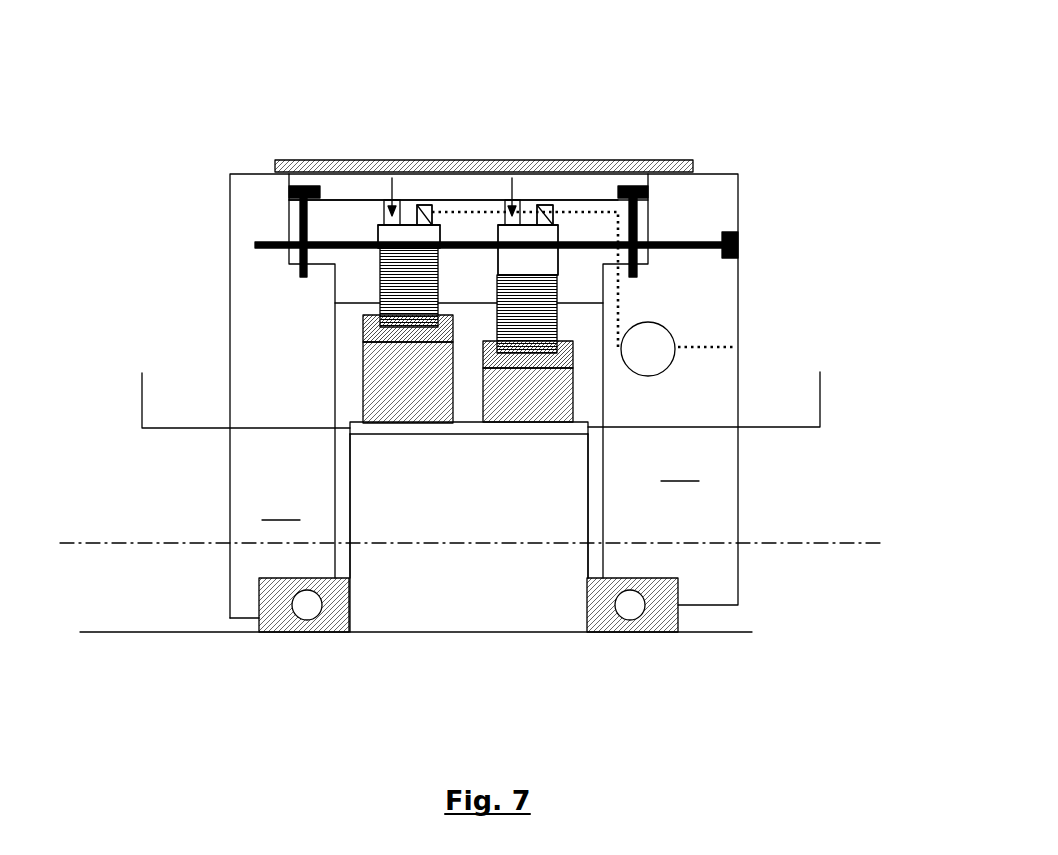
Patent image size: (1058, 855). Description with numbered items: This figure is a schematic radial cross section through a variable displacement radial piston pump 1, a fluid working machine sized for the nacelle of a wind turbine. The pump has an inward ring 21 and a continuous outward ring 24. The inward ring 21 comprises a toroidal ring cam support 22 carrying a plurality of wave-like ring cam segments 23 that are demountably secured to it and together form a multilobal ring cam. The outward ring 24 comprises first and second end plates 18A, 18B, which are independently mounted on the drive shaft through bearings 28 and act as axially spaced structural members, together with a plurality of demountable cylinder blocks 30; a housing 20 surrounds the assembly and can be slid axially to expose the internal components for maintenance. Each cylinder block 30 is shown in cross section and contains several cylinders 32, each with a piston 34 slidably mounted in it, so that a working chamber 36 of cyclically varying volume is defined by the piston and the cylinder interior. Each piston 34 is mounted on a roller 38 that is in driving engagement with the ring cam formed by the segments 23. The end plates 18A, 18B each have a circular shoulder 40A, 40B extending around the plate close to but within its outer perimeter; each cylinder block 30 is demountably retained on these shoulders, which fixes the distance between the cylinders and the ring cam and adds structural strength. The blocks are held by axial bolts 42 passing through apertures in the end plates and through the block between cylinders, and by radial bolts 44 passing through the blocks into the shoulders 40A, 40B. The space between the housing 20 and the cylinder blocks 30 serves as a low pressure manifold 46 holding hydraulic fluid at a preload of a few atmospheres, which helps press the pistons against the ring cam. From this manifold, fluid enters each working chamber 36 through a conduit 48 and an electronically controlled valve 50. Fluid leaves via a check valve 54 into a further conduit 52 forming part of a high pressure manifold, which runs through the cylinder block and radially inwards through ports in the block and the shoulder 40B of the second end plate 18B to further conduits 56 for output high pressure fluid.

The variable displacement radial piston pump 1 is at (92, 94).
The first end plate 18A is at (281, 510).
The second end plate 18B is at (680, 471).
The housing 20 is at (663, 160).
The inward ring 21 is at (598, 508).
The toroidal ring cam support 22 is at (363, 517).
The ring cam segments 23 is at (385, 386).
The outward ring 24 is at (797, 170).
The bearings 28 is at (293, 625).
The cylinder blocks 30 is at (386, 224).
The cylinders 32 is at (441, 226).
The piston 34 is at (380, 284).
The working chamber 36 is at (393, 238).
The roller 38 is at (372, 335).
The circular shoulder of first end plate 40A is at (322, 268).
The circular shoulder of second end plate 40B is at (622, 277).
The axial bolts 42 is at (738, 240).
The radial bolts 44 is at (357, 202).
The low pressure manifold 46 is at (383, 212).
The conduit 48 is at (401, 210).
The electronically controlled valve 50 is at (372, 183).
The further conduit 52 is at (419, 205).
The check valve 54 is at (437, 225).
The conduits for output high pressure fluid 56 is at (618, 222).